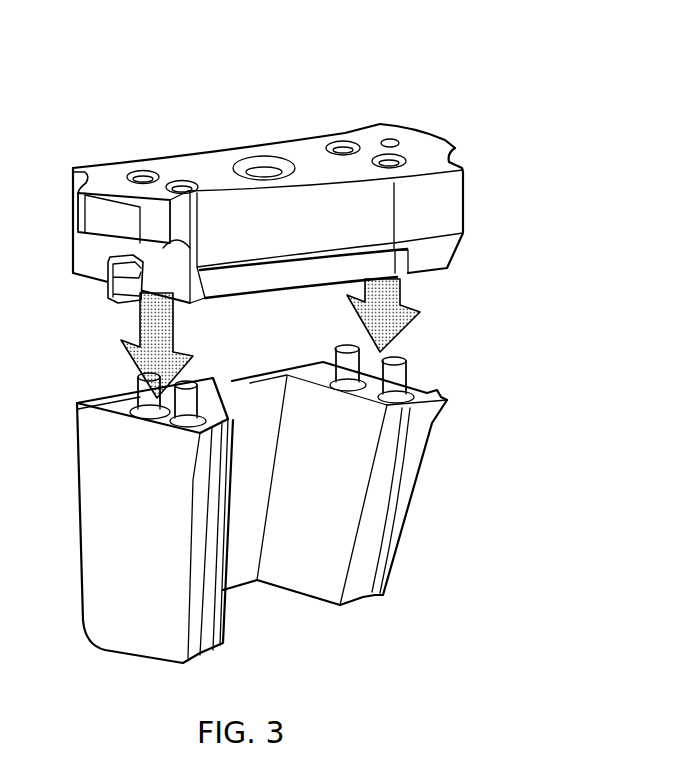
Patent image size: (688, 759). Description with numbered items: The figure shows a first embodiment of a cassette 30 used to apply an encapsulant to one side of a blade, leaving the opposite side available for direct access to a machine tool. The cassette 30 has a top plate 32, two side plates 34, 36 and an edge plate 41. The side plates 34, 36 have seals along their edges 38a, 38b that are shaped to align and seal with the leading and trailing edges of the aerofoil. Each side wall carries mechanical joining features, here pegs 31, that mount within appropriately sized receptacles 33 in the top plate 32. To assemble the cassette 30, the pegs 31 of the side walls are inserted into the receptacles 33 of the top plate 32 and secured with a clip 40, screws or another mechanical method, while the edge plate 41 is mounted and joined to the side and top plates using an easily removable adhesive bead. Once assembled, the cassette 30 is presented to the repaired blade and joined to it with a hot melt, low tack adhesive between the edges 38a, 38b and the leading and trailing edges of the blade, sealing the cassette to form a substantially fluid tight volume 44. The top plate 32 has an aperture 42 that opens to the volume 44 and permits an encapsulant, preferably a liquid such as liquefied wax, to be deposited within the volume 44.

The cassette 30 is at (545, 128).
The pegs 31 is at (400, 375).
The top plate 32 is at (212, 165).
The receptacles 33 is at (397, 152).
The side plate 34 is at (105, 497).
The side plate 36 is at (382, 511).
The edge 38a is at (223, 636).
The edge 38b is at (413, 440).
The clip 40 is at (113, 292).
The edge plate 41 is at (250, 378).
The aperture 42 is at (270, 157).
The volume 44 is at (328, 491).